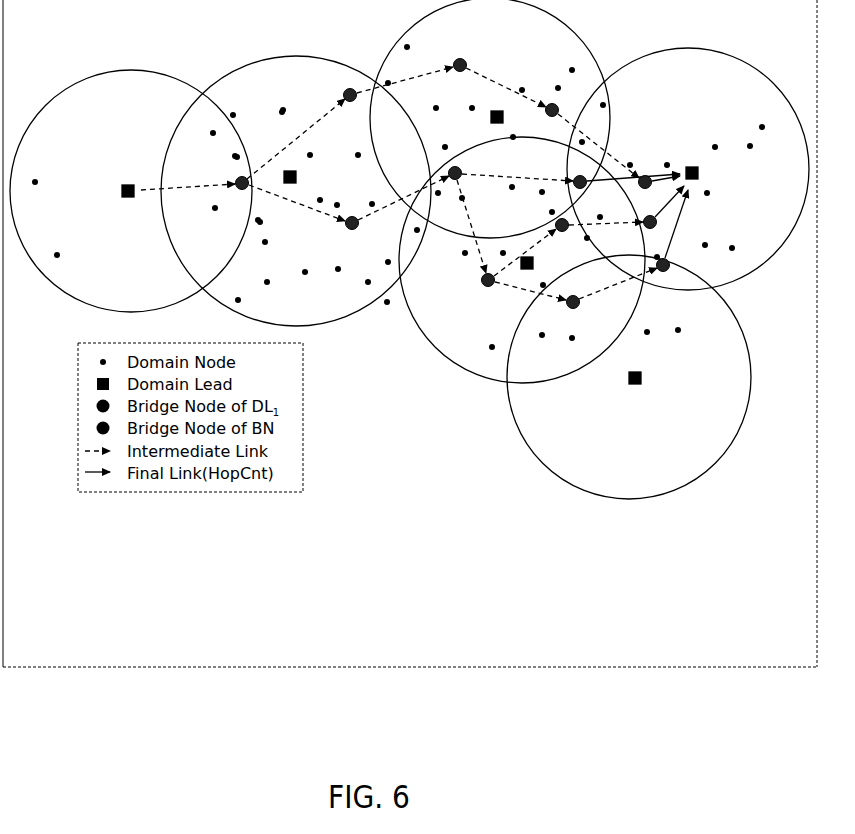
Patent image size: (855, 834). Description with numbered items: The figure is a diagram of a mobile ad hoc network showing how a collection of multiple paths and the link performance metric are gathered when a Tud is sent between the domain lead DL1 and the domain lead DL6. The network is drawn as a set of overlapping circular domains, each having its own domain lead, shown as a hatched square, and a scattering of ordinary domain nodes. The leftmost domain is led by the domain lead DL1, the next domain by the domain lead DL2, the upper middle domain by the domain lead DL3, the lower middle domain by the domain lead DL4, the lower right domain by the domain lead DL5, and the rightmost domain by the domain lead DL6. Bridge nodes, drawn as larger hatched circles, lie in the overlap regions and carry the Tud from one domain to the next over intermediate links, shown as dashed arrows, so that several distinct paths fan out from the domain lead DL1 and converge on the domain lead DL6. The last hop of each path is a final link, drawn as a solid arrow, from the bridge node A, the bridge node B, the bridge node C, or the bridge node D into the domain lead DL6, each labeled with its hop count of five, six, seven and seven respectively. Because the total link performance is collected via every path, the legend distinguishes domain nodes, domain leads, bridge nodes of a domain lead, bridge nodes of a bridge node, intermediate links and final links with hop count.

The domain lead DL1 is at (138, 204).
The domain lead DL2 is at (290, 191).
The domain lead DL3 is at (516, 117).
The domain lead DL4 is at (546, 263).
The domain lead DL5 is at (653, 378).
The domain lead DL6 is at (710, 174).
The bridge node A is at (600, 190).
The bridge node B is at (653, 191).
The bridge node C is at (671, 219).
The bridge node D is at (683, 261).